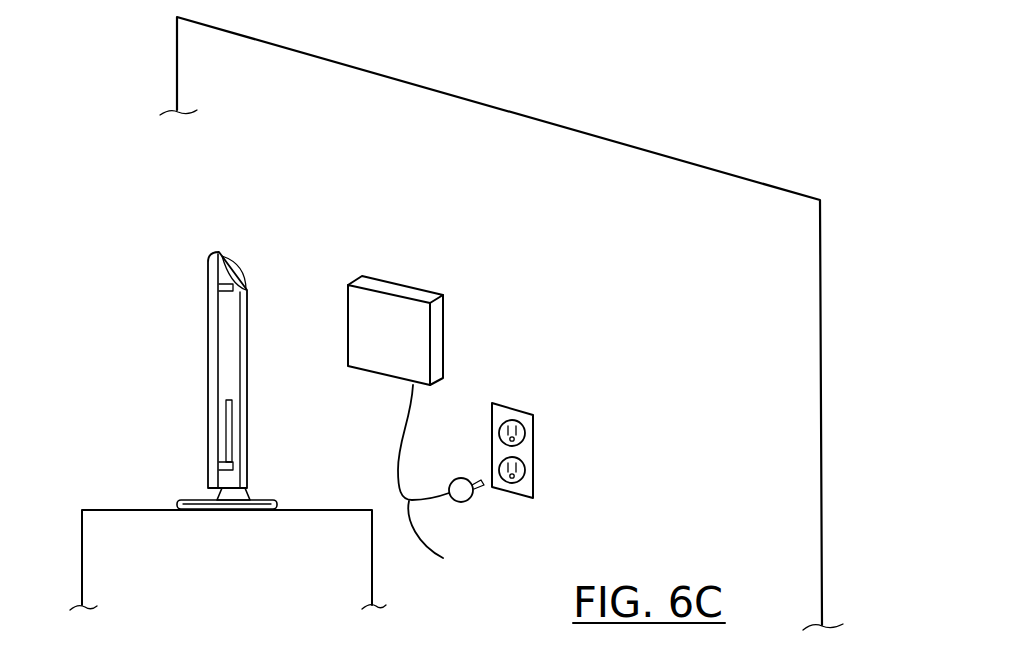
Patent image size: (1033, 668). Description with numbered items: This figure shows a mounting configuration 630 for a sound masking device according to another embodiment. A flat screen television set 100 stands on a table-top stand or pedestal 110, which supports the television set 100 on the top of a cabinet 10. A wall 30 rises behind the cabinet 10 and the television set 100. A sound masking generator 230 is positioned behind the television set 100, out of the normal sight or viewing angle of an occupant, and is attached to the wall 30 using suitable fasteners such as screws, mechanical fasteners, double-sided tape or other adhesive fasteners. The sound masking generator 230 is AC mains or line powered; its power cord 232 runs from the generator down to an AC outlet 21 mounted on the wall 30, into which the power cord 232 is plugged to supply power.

The mounting configuration 630 is at (435, 151).
The wall 30 is at (709, 195).
The cabinet 10 is at (114, 497).
The television set 100 is at (220, 229).
The table-top stand or pedestal 110 is at (200, 500).
The sound masking generator 230 is at (396, 290).
The power cord 232 is at (448, 486).
The AC outlet 21 is at (535, 458).